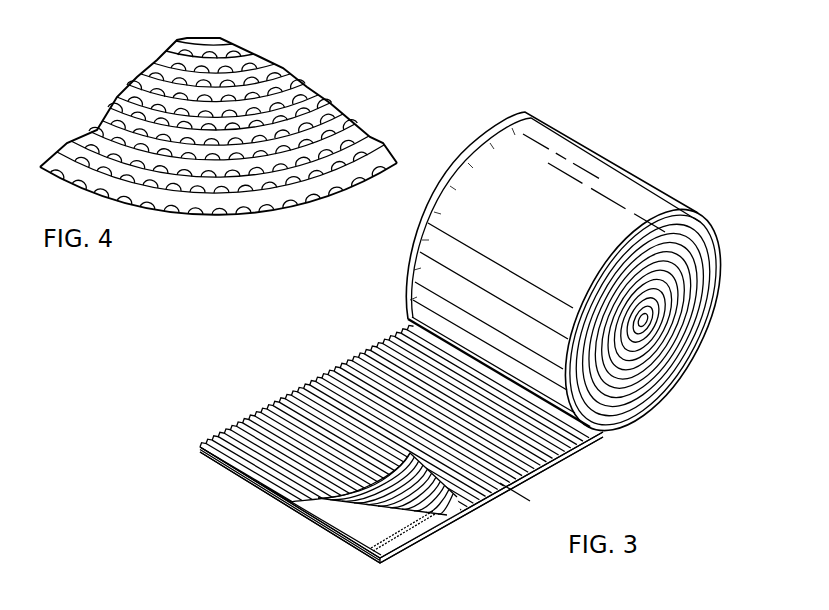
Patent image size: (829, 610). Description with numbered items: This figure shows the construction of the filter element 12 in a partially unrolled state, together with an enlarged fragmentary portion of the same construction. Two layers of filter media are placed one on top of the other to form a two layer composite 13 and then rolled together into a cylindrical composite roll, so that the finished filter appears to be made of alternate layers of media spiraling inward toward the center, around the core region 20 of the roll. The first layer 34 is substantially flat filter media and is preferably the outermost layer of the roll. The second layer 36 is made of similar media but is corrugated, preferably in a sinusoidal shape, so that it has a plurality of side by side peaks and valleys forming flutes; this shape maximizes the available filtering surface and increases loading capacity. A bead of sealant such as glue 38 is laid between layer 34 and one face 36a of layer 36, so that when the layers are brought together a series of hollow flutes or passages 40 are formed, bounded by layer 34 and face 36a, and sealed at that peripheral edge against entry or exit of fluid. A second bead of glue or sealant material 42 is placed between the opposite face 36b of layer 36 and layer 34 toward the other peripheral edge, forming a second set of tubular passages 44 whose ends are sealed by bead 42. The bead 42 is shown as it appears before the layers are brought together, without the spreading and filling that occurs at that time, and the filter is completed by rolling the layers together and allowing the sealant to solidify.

In FIG. 3, the filter element 12 is at (614, 170).
In FIG. 3, the two layer composite 13 is at (262, 500).
In FIG. 3, the spirally wound roll core 20 is at (645, 319).
In FIG. 3, the first layer 34 is at (330, 518).
In FIG. 4, the second layer 36 is at (330, 187).
In FIG. 3, the second layer 36 is at (260, 420).
In FIG. 3, the face of layer 36 36a is at (437, 500).
In FIG. 3, the face of layer 36 36b is at (280, 457).
In FIG. 3, the glue 38 is at (425, 525).
In FIG. 4, the hollow flutes or passages 40 is at (235, 210).
In FIG. 3, the hollow flutes or passages 40 is at (512, 482).
In FIG. 3, the second bead of glue or sealant material 42 is at (490, 133).
In FIG. 4, the tubular passages 44 is at (192, 211).